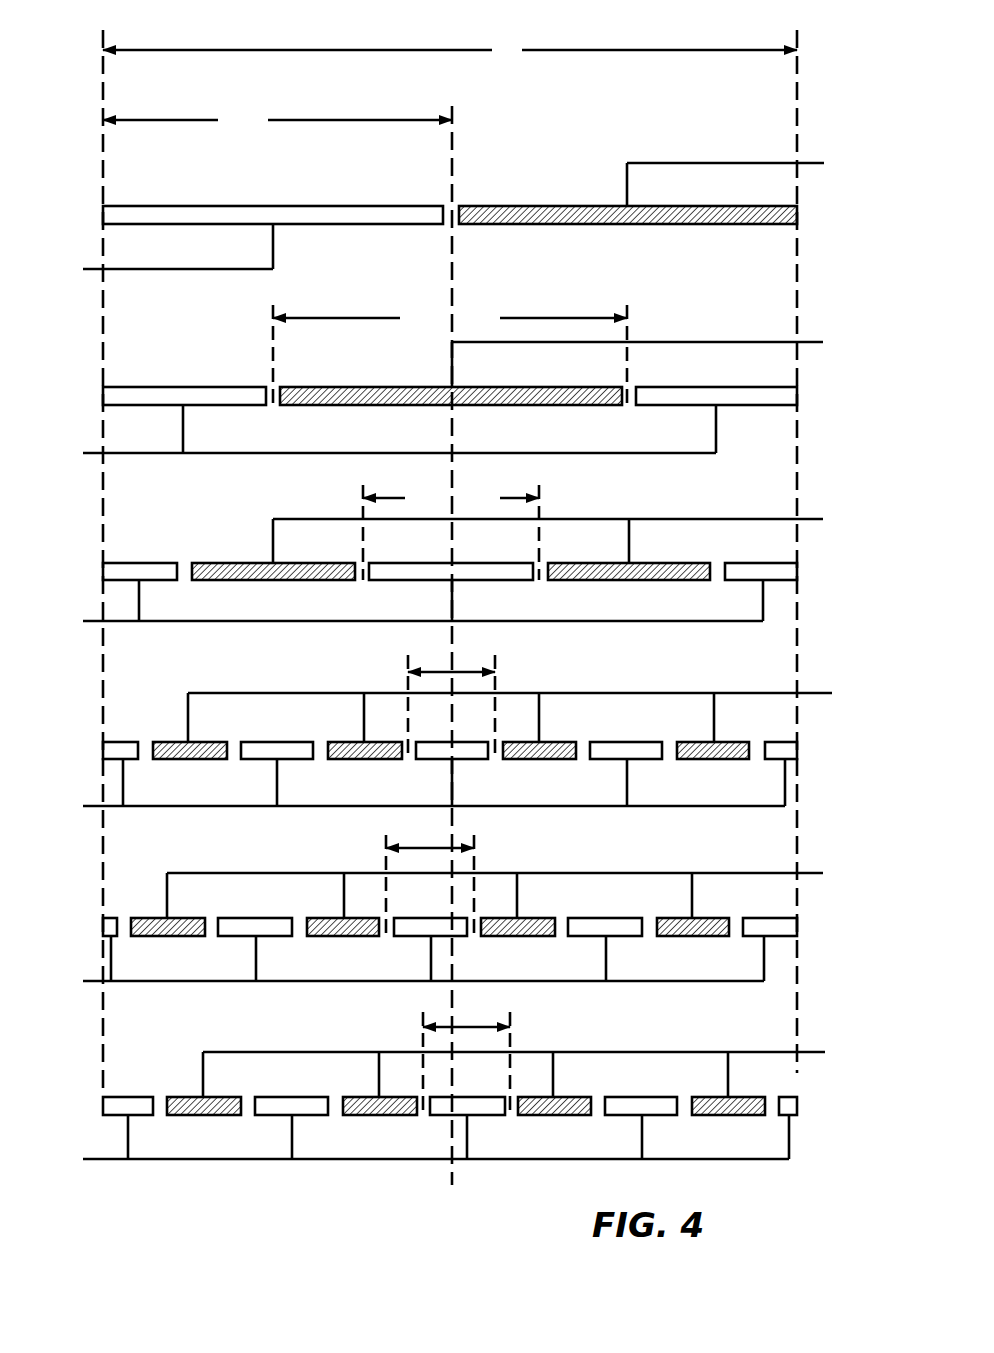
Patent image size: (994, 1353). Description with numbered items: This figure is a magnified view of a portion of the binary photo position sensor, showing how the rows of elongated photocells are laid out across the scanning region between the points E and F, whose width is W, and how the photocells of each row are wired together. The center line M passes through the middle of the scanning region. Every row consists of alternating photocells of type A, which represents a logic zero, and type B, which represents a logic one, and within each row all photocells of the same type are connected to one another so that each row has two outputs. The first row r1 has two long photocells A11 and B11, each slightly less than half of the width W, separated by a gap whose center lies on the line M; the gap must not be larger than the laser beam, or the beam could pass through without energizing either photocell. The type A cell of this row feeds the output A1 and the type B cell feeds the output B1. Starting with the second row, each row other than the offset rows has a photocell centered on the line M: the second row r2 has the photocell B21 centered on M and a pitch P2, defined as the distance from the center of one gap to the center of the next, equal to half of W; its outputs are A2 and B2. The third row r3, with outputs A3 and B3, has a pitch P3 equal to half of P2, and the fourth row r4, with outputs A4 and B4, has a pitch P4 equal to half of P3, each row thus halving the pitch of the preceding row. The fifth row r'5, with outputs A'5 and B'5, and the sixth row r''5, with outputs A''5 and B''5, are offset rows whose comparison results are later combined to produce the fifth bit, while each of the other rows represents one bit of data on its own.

The scanning region boundary E is at (102, 547).
The scanning region boundary F is at (797, 538).
The center line M is at (452, 647).
The width of scanning region W is at (450, 85).
The pitch of second row P2 is at (450, 355).
The pitch of third row P3 is at (451, 532).
The pitch of fourth row P4 is at (448, 880).
The first row r1 is at (463, 201).
The photocell A11 is at (304, 208).
The photocell B11 is at (650, 208).
The output of group A of first row A1 is at (161, 254).
The output of group B of first row B1 is at (739, 178).
The second row r2 is at (463, 377).
The type A photocell A is at (184, 376).
The photocell B21 is at (327, 386).
The output of group A of second row A2 is at (382, 436).
The output of group B of second row B2 is at (652, 359).
The third row r3 is at (463, 554).
The type B photocell B is at (273, 550).
The output of group A of third row A3 is at (405, 608).
The output of group B of third row B3 is at (562, 535).
The fourth row r4 is at (129, 748).
The output of group A of fourth row A4 is at (416, 790).
The output of group B of fourth row B4 is at (525, 712).
The fifth row r'5 is at (465, 926).
The output of group A of fifth row A'5 is at (403, 966).
The output of group B of fifth row B'5 is at (512, 890).
The sixth row r''5 is at (467, 1106).
The output of group A of sixth row A''5 is at (412, 1144).
The output of group B of sixth row B''5 is at (532, 1069).